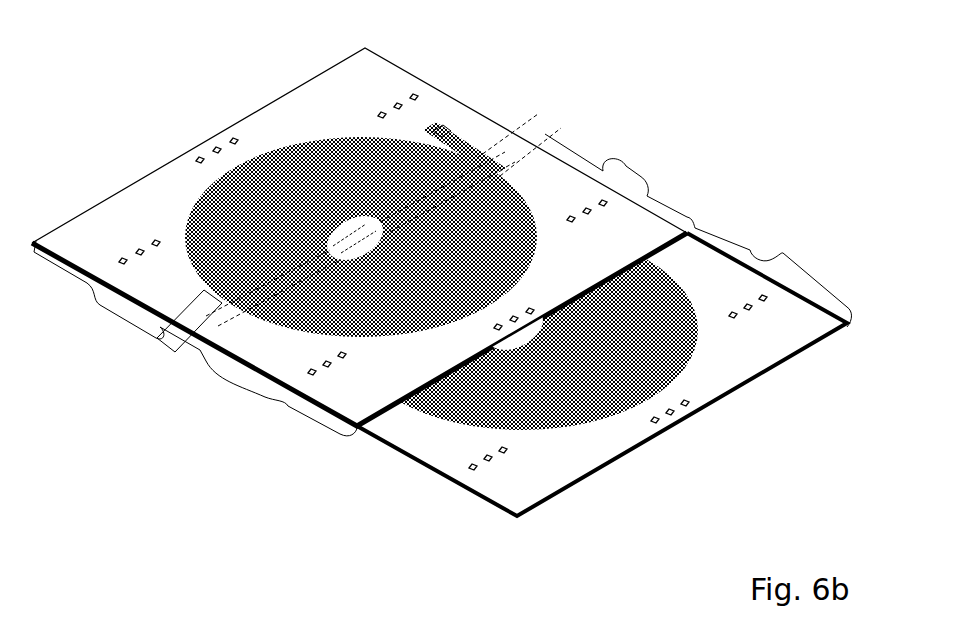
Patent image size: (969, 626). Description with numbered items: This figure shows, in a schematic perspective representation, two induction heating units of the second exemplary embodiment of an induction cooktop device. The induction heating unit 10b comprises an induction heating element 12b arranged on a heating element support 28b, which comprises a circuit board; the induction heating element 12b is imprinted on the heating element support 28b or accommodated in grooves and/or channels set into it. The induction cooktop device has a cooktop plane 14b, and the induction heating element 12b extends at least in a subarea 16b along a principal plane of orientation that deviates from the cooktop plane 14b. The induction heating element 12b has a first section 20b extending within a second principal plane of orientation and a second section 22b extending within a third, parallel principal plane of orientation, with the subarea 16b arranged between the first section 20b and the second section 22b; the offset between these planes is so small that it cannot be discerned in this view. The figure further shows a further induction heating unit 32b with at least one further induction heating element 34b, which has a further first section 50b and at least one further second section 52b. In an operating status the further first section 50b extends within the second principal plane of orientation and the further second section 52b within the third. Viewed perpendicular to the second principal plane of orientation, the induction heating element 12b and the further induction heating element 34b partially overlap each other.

The induction heating unit 10b is at (585, 165).
The induction heating element 12b is at (412, 140).
The cooktop plane 14b is at (616, 219).
The subarea 16b is at (167, 350).
The first section 20b is at (270, 403).
The second section 22b is at (98, 302).
The heating element support 28b is at (306, 118).
The further induction heating unit 32b is at (745, 259).
The further induction heating element 34b is at (660, 366).
The further first section 50b is at (782, 254).
The further second section 52b is at (621, 166).